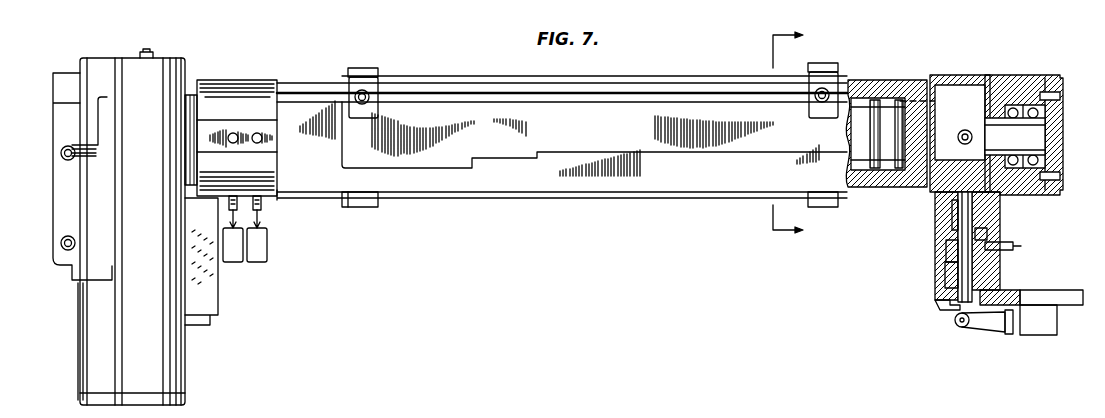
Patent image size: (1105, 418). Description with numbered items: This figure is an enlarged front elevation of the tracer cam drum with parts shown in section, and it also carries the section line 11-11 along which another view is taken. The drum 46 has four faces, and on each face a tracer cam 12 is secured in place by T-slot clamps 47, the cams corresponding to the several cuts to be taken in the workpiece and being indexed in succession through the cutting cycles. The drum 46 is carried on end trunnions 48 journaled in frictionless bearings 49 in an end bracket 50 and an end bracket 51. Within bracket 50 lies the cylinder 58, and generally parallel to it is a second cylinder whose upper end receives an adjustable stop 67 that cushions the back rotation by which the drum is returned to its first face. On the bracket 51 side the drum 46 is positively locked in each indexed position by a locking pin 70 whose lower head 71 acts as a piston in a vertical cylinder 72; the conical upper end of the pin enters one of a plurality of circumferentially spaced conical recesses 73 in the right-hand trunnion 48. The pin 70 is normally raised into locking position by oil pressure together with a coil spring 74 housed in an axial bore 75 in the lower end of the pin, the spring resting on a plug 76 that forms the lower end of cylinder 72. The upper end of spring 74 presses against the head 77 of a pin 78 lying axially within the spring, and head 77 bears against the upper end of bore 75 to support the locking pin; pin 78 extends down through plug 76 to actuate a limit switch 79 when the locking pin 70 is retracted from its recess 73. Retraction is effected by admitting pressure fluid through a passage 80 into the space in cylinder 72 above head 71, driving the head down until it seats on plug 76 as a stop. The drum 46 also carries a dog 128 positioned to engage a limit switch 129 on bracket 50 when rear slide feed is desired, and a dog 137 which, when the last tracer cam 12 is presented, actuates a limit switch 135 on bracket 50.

The section line 11- 11 is at (775, 141).
The tracer cam 12 is at (486, 78).
The drum 46 is at (186, 350).
The T-slot clamps 47 is at (373, 80).
The end trunnions 48 is at (1040, 138).
The frictionless bearings 49 is at (1018, 100).
The end bracket 50 is at (53, 195).
The end bracket 51 is at (1047, 196).
The cylinder 58 is at (78, 329).
The adjustable stop 67 is at (147, 52).
The locking pin 70 is at (936, 203).
The lower head 71 is at (950, 251).
The vertical cylinder 72 is at (947, 266).
The conical recesses 73 is at (963, 132).
The coil spring 74 is at (955, 227).
The axial bore 75 is at (985, 236).
The plug 76 is at (940, 301).
The head 77 is at (972, 206).
The pin 78 is at (955, 318).
The limit switch 79 is at (995, 335).
The passage 80 is at (998, 252).
The dog 128 is at (229, 204).
The limit switch 129 is at (236, 266).
The limit switch 135 is at (268, 250).
The dog 137 is at (261, 204).